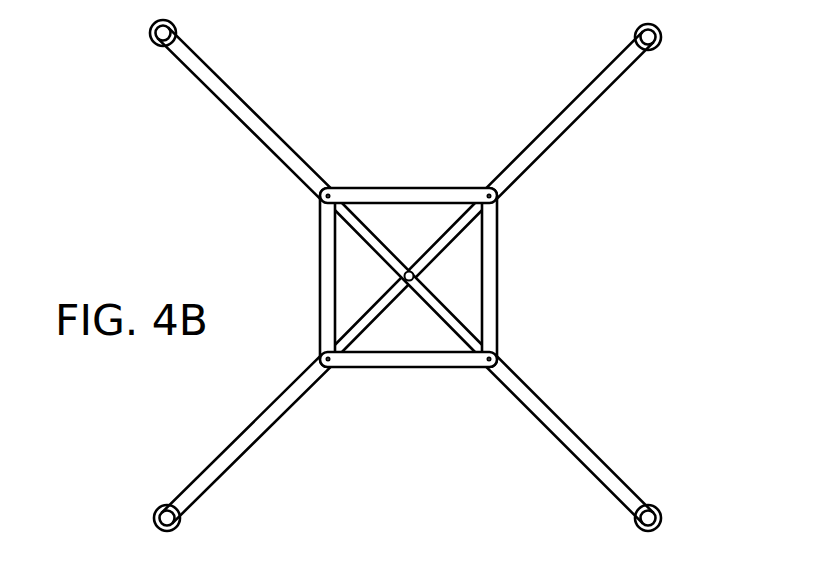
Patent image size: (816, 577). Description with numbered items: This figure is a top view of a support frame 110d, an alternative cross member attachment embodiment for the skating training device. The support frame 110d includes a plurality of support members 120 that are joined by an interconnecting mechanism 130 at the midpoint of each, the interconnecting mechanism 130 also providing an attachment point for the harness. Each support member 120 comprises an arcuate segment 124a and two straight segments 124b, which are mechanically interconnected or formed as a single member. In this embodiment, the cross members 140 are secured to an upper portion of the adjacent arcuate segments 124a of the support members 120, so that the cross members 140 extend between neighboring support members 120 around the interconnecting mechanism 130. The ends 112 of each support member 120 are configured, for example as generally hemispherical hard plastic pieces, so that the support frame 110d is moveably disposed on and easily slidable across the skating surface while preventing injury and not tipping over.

The support frame 110d is at (141, 84).
The ends 112 is at (177, 27).
The support members 120 is at (268, 120).
The arcuate segment 124a is at (245, 118).
The straight segments 124b is at (151, 33).
The interconnecting mechanism 130 is at (409, 271).
The cross members 140 is at (404, 188).